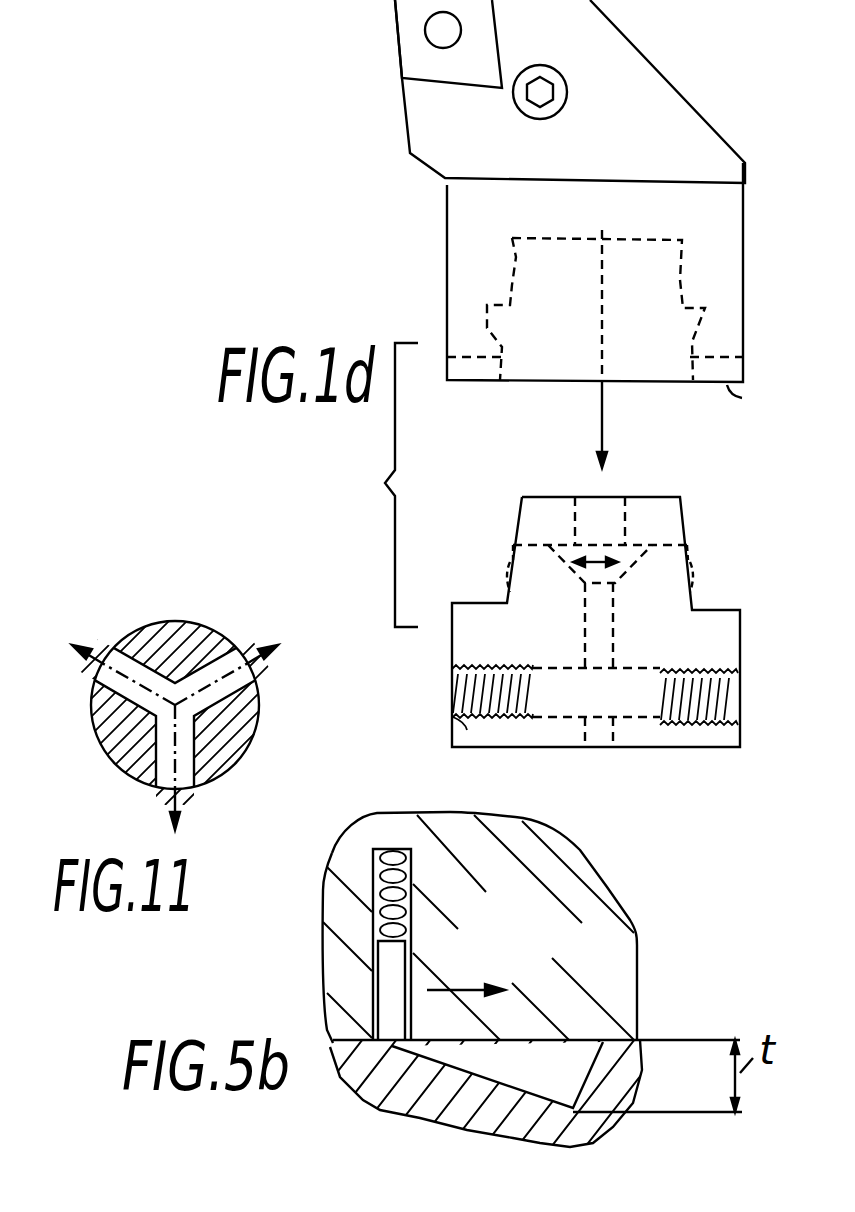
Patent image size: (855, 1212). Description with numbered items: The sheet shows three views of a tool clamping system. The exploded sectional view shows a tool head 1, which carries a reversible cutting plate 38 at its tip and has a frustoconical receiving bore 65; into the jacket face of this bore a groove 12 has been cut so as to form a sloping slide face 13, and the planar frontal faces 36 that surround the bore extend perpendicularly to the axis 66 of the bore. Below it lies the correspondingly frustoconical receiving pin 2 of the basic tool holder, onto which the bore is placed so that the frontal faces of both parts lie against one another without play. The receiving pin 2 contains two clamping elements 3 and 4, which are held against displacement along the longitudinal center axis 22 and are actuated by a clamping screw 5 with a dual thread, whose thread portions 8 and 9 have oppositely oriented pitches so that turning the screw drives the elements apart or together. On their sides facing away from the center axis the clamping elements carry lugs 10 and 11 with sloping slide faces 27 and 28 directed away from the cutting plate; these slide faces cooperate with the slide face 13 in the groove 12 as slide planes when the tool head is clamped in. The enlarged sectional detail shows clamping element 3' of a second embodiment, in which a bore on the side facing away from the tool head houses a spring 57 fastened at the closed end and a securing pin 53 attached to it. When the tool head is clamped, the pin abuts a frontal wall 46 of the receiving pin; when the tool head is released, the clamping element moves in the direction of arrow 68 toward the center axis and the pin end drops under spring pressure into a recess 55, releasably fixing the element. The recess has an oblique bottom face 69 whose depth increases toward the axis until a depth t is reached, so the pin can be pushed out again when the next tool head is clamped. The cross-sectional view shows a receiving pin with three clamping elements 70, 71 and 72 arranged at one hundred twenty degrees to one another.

In FIG. 1d, the tool head 1 is at (663, 97).
In FIG. 1d, the reversible cutting plate 38 is at (418, 43).
In FIG. 1d, the receiving bore 65 is at (512, 277).
In FIG. 1d, the groove 12 is at (706, 310).
In FIG. 1d, the axis of the bore 66 is at (602, 288).
In FIG. 1d, the sloping slide face 13 is at (692, 342).
In FIG. 1d, the planar frontal faces 36 is at (742, 398).
In FIG. 1d, the receiving pin 2 is at (690, 500).
In FIG. 1d, the clamping element 3 is at (530, 500).
In FIG. 1d, the clamping element 4 is at (657, 563).
In FIG. 1d, the longitudinal center axis 22 is at (603, 523).
In FIG. 1d, the lug 10 is at (503, 558).
In FIG. 1d, the lug 11 is at (698, 567).
In FIG. 1d, the sloping slide face 27 is at (507, 578).
In FIG. 1d, the sloping slide face 28 is at (695, 587).
In FIG. 1d, the clamping screw 5 is at (440, 701).
In FIG. 1d, the thread portion 8 is at (452, 735).
In FIG. 1d, the thread portion 9 is at (707, 733).
In FIG. 11, the clamping element 70 is at (128, 663).
In FIG. 11, the clamping element 71 is at (222, 660).
In FIG. 11, the clamping element 72 is at (183, 760).
In FIG. 5b, the clamping element 3' is at (500, 927).
In FIG. 5b, the spring 57 is at (385, 860).
In FIG. 5b, the securing pin 53 is at (380, 990).
In FIG. 5b, the arrow 68 is at (460, 987).
In FIG. 5b, the frontal wall 46 is at (357, 1067).
In FIG. 5b, the recess 55 is at (580, 1095).
In FIG. 5b, the bottom face 69 is at (538, 1102).